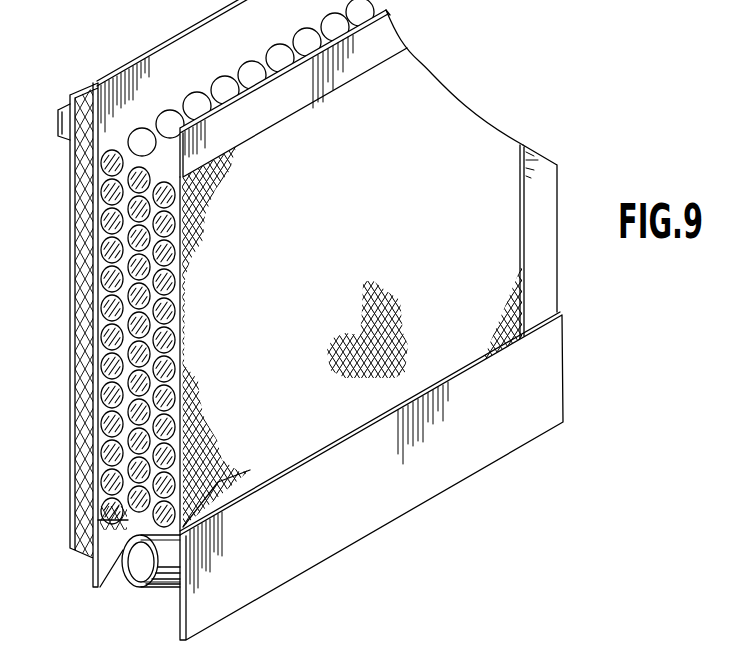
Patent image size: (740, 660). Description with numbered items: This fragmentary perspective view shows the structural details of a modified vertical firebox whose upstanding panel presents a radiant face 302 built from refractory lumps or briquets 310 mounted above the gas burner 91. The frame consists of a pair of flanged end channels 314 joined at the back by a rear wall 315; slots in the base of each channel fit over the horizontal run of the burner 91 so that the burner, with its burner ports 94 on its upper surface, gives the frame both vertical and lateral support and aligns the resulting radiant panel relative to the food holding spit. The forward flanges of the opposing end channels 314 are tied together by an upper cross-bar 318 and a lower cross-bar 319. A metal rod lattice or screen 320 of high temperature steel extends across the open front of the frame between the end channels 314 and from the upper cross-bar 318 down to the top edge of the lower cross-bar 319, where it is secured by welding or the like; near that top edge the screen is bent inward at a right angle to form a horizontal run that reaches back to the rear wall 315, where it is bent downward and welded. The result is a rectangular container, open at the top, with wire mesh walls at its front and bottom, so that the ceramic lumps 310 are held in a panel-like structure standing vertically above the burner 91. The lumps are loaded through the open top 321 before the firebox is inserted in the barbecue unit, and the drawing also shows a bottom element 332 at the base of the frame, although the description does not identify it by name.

The radiant face 302 is at (470, 100).
The refractory lumps or briquets 310 is at (227, 77).
The flanged end channel 314 is at (557, 187).
The rear wall 315 is at (172, 50).
The upper cross-bar 318 is at (390, 37).
The lower cross-bar 319 is at (555, 378).
The screen 320 is at (286, 474).
The open top 321 is at (150, 88).
The bottom plate 332 is at (118, 532).
The burner 91 is at (163, 588).
The burner ports 94 is at (165, 543).